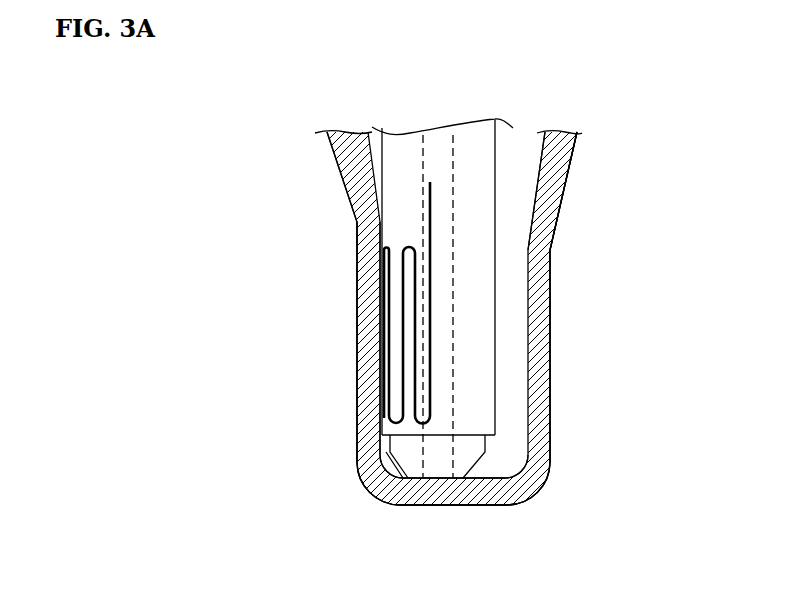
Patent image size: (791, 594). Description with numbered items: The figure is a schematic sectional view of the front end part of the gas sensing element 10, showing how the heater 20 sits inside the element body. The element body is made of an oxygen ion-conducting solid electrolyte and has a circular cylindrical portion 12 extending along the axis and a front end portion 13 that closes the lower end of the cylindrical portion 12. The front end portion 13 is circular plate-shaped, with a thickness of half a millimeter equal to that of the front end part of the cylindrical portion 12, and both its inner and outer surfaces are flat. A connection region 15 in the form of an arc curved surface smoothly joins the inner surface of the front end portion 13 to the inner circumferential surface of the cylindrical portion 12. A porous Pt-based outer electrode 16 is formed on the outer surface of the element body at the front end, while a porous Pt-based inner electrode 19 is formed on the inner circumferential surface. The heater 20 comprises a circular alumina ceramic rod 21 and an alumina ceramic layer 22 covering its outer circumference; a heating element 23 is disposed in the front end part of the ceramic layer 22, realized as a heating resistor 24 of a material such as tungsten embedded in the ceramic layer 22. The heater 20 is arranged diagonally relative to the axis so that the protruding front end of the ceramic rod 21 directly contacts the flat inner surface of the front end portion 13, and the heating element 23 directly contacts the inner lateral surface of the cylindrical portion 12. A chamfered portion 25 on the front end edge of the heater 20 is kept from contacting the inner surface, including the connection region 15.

The gas sensing element 10 is at (633, 232).
The cylindrical portion 12 is at (551, 291).
The front end portion 13 is at (477, 506).
The connection region 15 is at (531, 460).
The outer electrode 16 is at (551, 373).
The inner electrode 19 is at (544, 173).
The heater 20 is at (368, 418).
The ceramic rod 21 is at (389, 472).
The ceramic layer 22 is at (382, 174).
The heating element 23 is at (385, 307).
The heating resistor 24 is at (384, 356).
The chamfered portion 25 is at (403, 484).